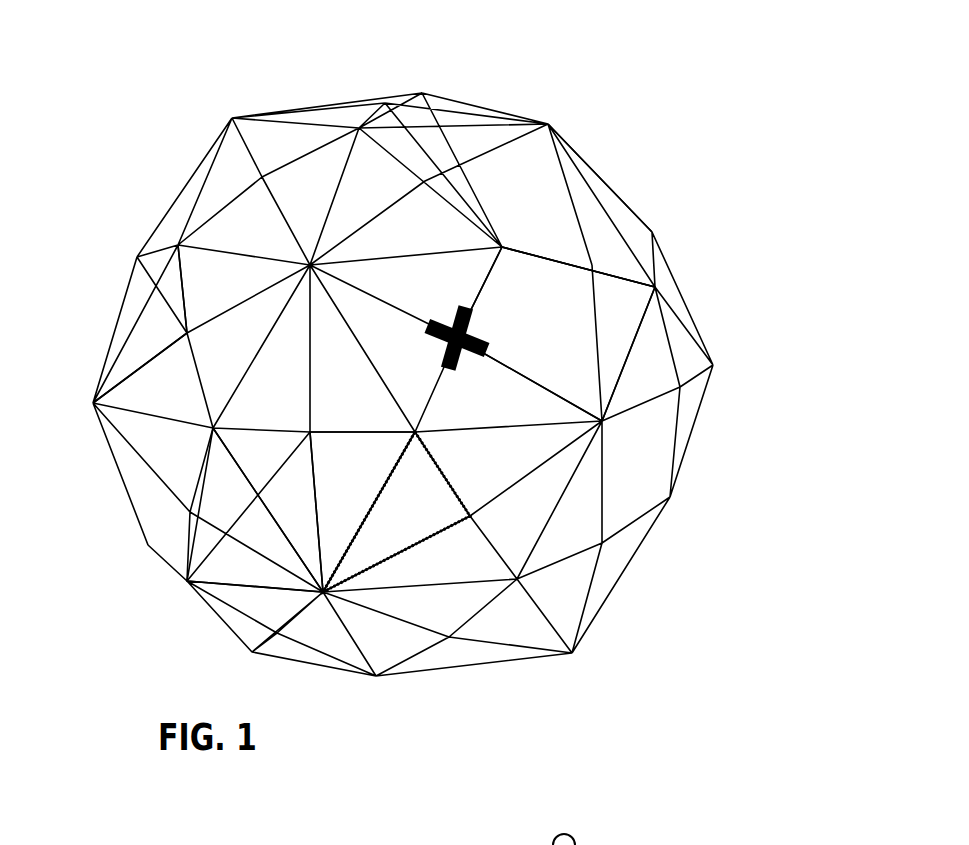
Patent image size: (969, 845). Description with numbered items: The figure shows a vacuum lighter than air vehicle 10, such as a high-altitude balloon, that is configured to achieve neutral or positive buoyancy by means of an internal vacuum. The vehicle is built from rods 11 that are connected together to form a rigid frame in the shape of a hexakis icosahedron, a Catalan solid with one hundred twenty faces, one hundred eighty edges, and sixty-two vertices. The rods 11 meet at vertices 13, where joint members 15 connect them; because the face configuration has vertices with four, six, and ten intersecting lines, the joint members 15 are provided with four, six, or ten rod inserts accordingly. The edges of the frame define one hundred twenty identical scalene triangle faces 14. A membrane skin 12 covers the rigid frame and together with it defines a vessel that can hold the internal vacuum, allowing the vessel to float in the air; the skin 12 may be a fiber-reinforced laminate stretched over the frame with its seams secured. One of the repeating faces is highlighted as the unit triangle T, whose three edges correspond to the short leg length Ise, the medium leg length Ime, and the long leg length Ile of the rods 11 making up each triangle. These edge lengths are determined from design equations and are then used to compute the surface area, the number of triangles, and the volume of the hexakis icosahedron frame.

The vacuum lighter than air vehicle 10 is at (185, 62).
The rods 11 is at (143, 367).
The membrane skin 12 is at (565, 298).
The vertices 13 is at (502, 247).
The scalene triangle faces 14 is at (353, 497).
The joint members 15 is at (457, 342).
The unit triangle T is at (396, 512).
The long leg length Ile is at (367, 530).
The medium leg length Ime is at (407, 543).
The short leg length Ise is at (440, 470).